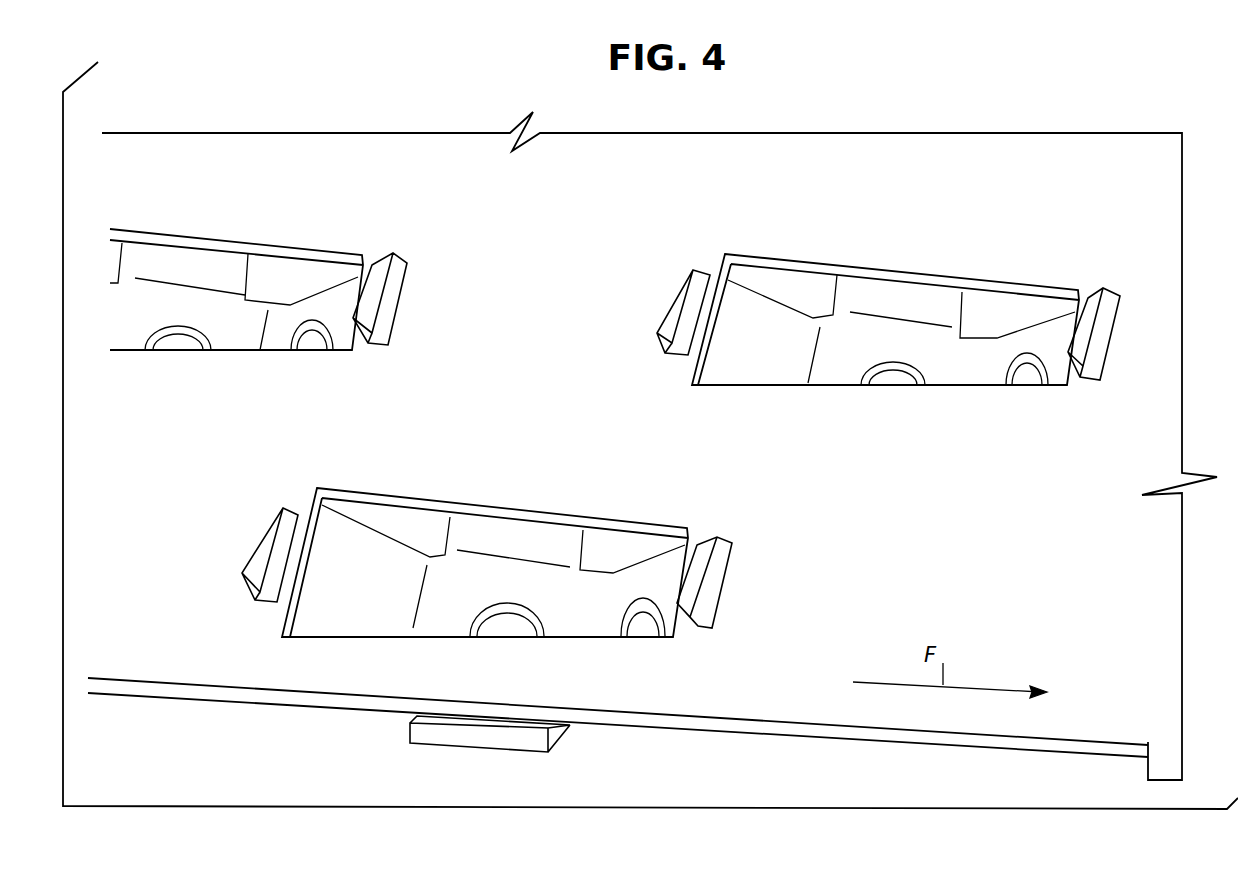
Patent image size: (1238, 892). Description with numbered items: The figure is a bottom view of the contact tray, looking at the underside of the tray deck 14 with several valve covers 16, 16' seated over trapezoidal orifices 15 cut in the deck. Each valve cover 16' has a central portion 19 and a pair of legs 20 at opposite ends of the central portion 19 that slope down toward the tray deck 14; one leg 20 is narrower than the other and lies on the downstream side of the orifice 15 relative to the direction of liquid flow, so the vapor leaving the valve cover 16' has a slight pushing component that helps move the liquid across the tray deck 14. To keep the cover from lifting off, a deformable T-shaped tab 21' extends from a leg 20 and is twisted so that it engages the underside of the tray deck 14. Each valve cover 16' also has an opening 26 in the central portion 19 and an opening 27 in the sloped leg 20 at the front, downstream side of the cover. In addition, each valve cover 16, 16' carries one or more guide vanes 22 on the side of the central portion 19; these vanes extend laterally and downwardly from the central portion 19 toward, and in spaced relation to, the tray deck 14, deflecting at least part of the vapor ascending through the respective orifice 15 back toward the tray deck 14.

The tray deck 14 is at (403, 190).
The orifice 15 is at (125, 340).
The valve cover 16 is at (594, 332).
The valve cover 16' is at (485, 534).
The central portion 19 is at (950, 367).
The leg 20 is at (753, 363).
The deformable T-shaped tab 21' is at (661, 430).
The guide vane 22 is at (202, 263).
The opening 26 is at (152, 340).
The opening 27 is at (298, 350).